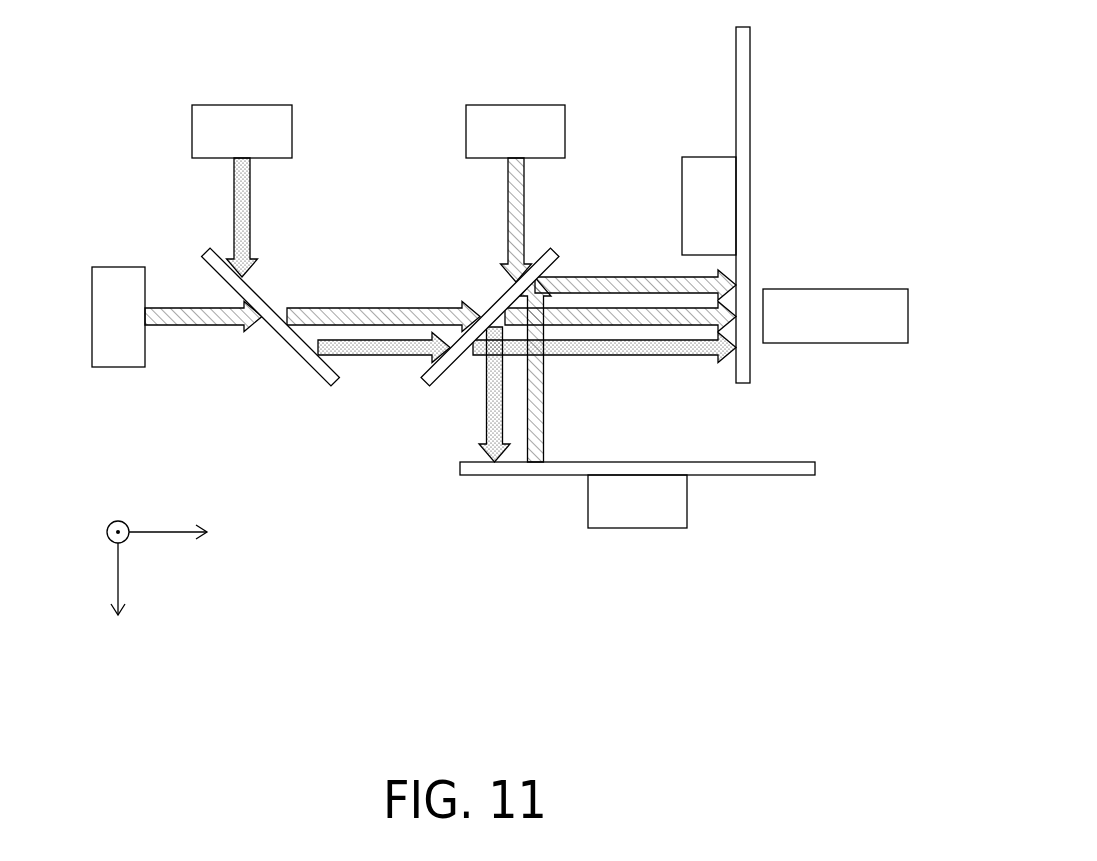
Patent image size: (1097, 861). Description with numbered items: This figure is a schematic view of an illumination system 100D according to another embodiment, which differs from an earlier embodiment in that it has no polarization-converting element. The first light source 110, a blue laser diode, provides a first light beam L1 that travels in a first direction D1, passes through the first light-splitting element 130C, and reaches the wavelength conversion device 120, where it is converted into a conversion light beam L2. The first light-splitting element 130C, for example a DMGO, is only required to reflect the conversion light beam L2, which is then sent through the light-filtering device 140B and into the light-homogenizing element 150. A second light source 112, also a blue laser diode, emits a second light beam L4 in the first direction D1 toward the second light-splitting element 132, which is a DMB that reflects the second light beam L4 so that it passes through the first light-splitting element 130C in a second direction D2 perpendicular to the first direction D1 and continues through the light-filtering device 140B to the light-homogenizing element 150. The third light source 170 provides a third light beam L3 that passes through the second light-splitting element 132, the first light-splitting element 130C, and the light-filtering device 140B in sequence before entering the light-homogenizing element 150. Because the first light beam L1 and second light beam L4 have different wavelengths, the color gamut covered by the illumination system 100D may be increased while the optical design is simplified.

The illumination system 100D is at (878, 653).
The first light source 110 is at (516, 122).
The second light source 112 is at (243, 123).
The wavelength conversion device 120 is at (641, 510).
The first light-splitting element 130C is at (548, 262).
The second light-splitting element 132 is at (300, 350).
The light-filtering device 140B is at (707, 170).
The light-homogenizing element 150 is at (840, 305).
The third light source 170 is at (120, 290).
The first light beam L1 is at (512, 190).
The conversion light beam L2 is at (540, 393).
The third light beam L3 is at (188, 320).
The second light beam L4 is at (236, 190).
The first direction D1 is at (116, 598).
The second direction D2 is at (175, 534).